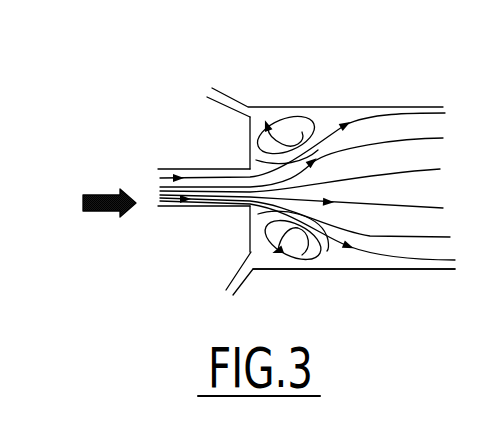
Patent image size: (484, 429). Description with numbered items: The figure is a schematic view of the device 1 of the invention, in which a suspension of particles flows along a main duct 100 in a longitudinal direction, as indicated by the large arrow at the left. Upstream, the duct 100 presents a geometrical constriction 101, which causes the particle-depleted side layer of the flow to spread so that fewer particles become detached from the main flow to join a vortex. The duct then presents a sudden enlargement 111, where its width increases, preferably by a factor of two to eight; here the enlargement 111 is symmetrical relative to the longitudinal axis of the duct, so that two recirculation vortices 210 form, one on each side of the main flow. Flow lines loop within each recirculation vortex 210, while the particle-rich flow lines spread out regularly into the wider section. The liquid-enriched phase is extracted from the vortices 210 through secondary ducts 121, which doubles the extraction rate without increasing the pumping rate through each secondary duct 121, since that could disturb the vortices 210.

The device 1 is at (166, 236).
The duct 100 is at (213, 207).
The geometrical constriction 101 is at (202, 169).
The sudden enlargement 111 is at (268, 258).
The secondary duct 121 is at (235, 100).
The recirculation vortex 210 is at (300, 128).